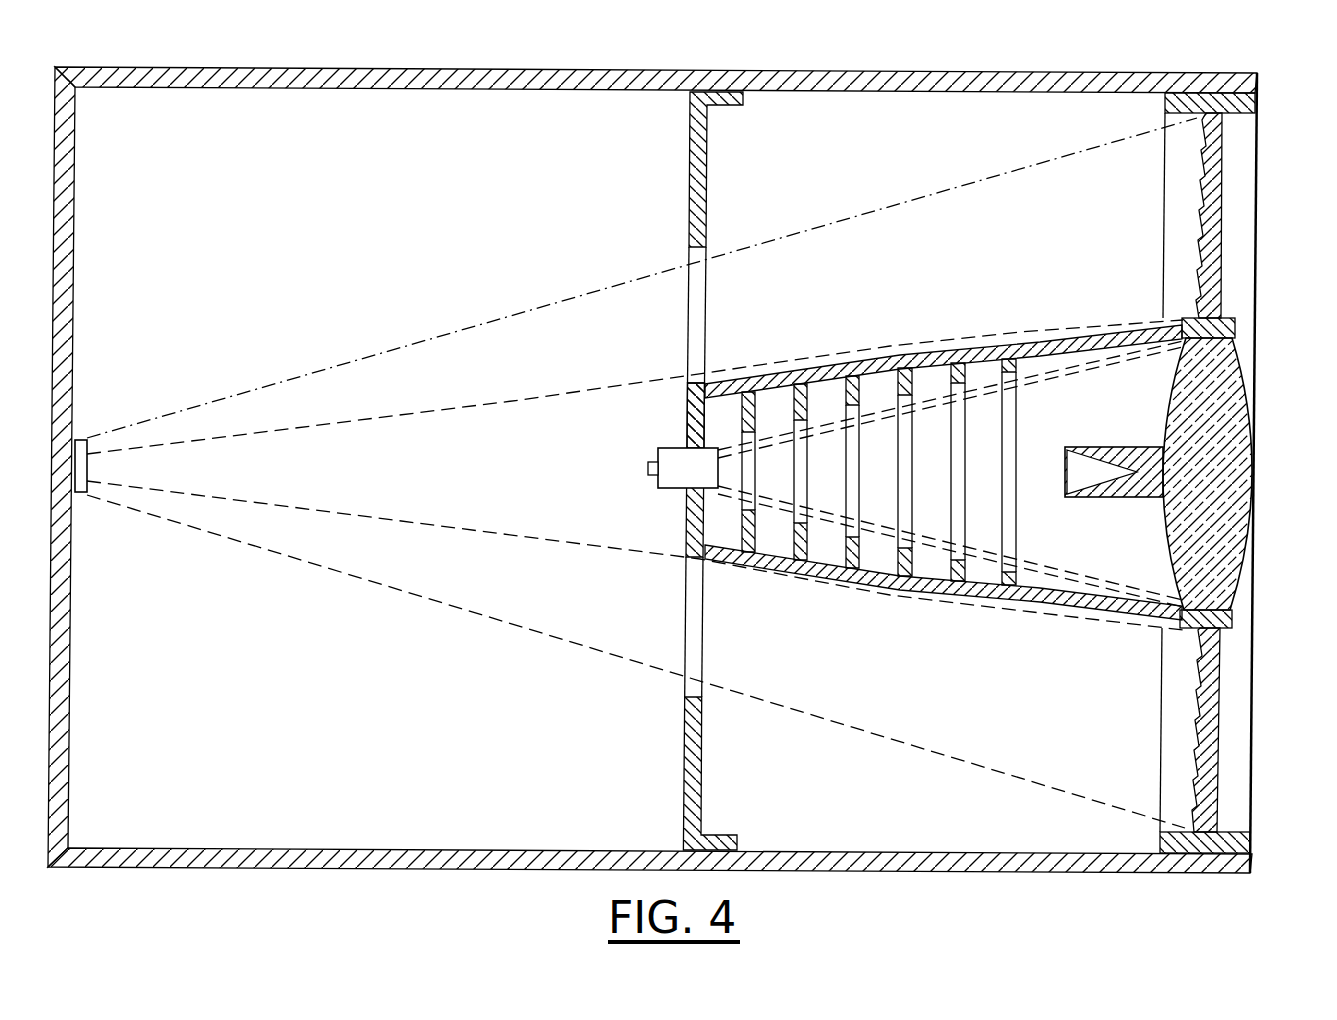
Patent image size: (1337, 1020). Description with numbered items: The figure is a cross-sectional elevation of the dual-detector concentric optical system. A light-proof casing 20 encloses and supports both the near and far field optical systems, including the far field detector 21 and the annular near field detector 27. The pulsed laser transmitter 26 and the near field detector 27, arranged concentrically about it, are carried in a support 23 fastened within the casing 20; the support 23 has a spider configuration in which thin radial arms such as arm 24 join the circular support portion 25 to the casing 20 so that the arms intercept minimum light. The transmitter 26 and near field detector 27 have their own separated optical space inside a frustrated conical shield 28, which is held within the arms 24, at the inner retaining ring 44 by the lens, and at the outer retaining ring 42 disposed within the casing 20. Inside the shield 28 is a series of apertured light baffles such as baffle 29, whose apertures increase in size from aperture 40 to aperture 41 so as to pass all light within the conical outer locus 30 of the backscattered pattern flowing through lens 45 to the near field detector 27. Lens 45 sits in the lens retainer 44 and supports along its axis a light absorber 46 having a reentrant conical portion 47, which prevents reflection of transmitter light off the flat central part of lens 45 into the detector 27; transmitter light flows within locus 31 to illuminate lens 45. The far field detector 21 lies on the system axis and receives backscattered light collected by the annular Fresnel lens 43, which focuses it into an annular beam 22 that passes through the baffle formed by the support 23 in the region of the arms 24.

The light-proof casing 20 is at (300, 61).
The far field detector 21 is at (88, 438).
The annular beam 22 is at (478, 352).
The support 23 is at (708, 171).
The support arm 24 is at (704, 305).
The circular support portion 25 is at (690, 418).
The pulsed laser transmitter 26 is at (656, 458).
The near field detector 27 is at (648, 470).
The frustrated conical shield 28 is at (861, 363).
The apertured light baffle 29 is at (806, 418).
The conical outer locus 30 is at (808, 427).
The locus 31 is at (870, 420).
The aperture 40 is at (748, 478).
The aperture 41 is at (1016, 418).
The outer retaining ring 42 is at (1165, 108).
The annular Fresnel lens 43 is at (1223, 195).
The inner retaining ring 44 is at (1236, 328).
The lens 45 is at (1248, 405).
The light absorber 46 is at (1110, 448).
The reentrant conical portion 47 is at (1075, 472).